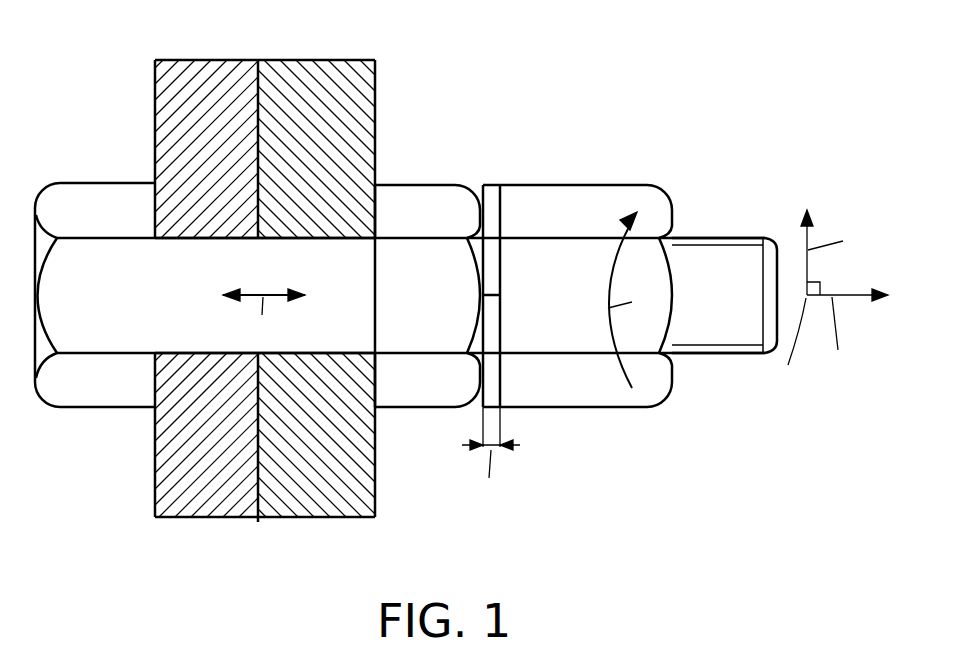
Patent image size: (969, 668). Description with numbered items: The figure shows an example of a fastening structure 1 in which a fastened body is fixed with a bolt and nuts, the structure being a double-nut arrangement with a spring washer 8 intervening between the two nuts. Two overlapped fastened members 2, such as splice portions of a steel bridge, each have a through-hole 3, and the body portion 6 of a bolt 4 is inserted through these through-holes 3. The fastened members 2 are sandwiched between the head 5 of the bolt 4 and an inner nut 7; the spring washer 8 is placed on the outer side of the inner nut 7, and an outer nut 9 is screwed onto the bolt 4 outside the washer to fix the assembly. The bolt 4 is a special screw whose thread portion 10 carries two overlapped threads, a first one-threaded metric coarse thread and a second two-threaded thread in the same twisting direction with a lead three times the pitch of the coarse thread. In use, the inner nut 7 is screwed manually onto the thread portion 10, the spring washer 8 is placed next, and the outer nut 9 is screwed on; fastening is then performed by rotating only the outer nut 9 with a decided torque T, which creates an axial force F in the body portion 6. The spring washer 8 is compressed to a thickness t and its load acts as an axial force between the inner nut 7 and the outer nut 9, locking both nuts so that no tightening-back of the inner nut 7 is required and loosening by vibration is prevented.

The fastening structure 1 is at (703, 167).
The fastened members 2 is at (210, 88).
The through-hole 3 is at (175, 245).
The bolt 4 is at (710, 353).
The head 5 is at (104, 387).
The body portion 6 is at (278, 276).
The inner nut 7 is at (449, 222).
The spring washer 8 is at (493, 192).
The outer nut 9 is at (575, 203).
The thread portion 10 is at (707, 282).